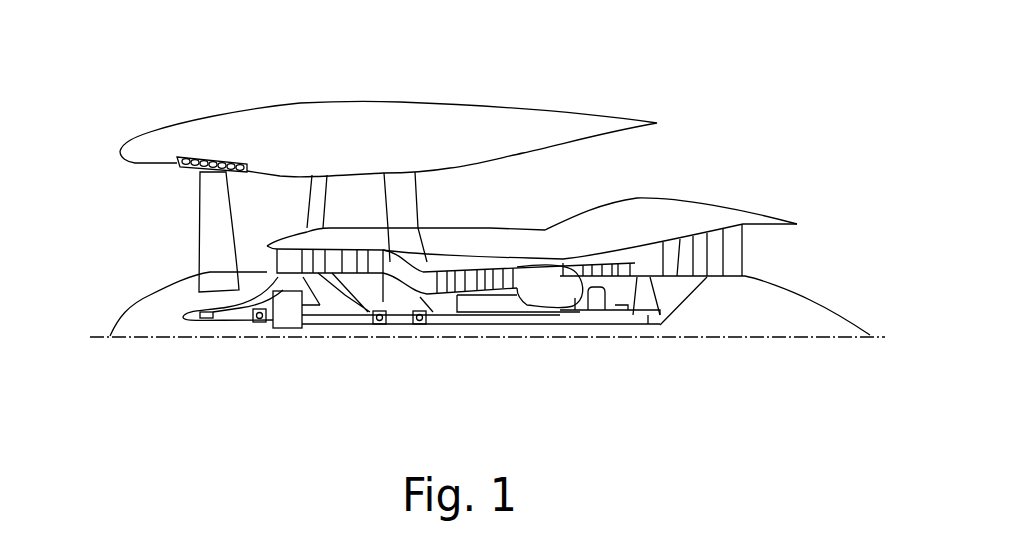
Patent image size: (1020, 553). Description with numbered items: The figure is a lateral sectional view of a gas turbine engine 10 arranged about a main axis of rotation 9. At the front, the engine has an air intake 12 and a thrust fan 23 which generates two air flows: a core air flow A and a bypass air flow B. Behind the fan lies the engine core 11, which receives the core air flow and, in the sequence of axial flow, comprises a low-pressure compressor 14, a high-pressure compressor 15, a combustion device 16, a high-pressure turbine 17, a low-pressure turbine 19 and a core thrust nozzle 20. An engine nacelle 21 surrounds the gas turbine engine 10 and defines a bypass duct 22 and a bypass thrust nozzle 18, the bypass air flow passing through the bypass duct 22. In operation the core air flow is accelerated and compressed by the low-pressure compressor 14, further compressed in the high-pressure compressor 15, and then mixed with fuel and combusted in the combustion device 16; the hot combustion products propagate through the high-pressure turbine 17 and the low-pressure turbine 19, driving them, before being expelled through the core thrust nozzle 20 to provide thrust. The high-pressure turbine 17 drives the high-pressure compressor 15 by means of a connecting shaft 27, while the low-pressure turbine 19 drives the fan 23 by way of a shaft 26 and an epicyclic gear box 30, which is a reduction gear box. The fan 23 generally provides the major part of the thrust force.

The main axis of rotation 9 is at (767, 339).
The gas turbine engine 10 is at (179, 122).
The core 11 is at (555, 254).
The air intake 12 is at (131, 184).
The low-pressure compressor 14 is at (348, 260).
The high-pressure compressor 15 is at (478, 280).
The combustion device 16 is at (540, 283).
The high-pressure turbine 17 is at (600, 262).
The bypass thrust nozzle 18 is at (747, 118).
The low-pressure turbine 19 is at (720, 258).
The core thrust nozzle 20 is at (799, 260).
The engine nacelle 21 is at (400, 112).
The bypass duct 22 is at (636, 161).
The thrust fan 23 is at (196, 245).
The shaft 26 is at (447, 325).
The connecting shaft 27 is at (505, 313).
The epicyclic gear box 30 is at (288, 328).